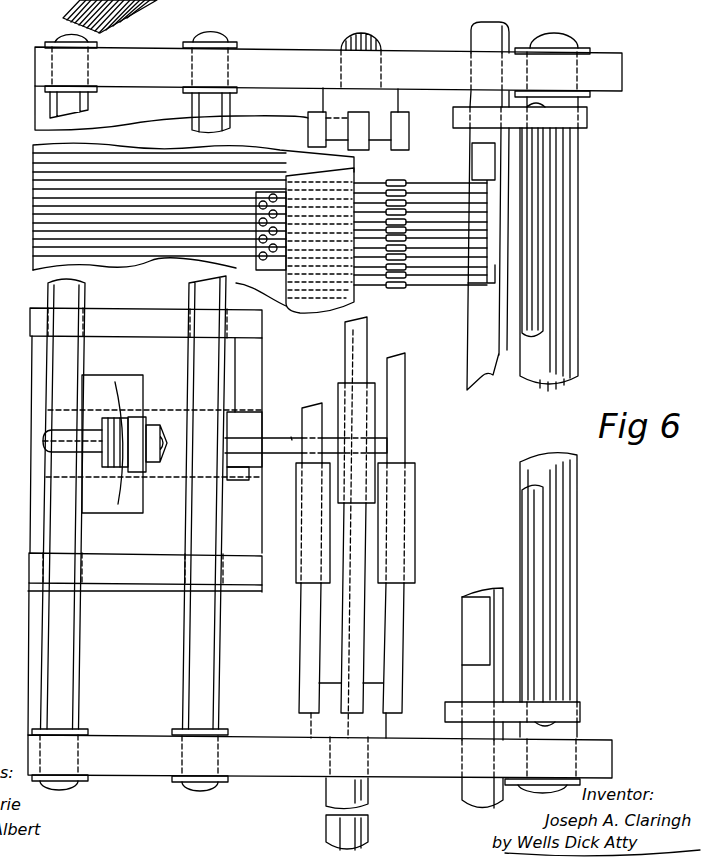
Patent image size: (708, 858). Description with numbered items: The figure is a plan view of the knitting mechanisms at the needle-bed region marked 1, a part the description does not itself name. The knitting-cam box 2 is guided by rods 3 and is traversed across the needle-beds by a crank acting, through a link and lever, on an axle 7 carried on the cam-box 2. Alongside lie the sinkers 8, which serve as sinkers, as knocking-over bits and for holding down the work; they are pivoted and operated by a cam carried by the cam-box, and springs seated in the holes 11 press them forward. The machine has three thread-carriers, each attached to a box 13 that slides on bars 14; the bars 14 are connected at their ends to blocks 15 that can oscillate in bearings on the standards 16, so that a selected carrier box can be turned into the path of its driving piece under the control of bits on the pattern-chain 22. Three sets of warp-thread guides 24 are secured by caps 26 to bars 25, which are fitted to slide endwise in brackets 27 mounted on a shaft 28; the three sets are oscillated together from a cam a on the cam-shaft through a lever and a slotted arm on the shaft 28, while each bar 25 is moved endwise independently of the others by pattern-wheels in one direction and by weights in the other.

The key plate 1 is at (352, 159).
The knitting-cam box 2 is at (145, 521).
The rods 3 is at (311, 441).
The axle 7 is at (105, 444).
The sinkers 8 is at (315, 240).
The holes 11 is at (287, 288).
The boxes 13 is at (338, 398).
The bars 14 is at (354, 425).
The blocks 15 is at (352, 722).
The standards 16 is at (325, 412).
The pattern-chain 22 is at (306, 446).
The warp-thread guides 24 is at (420, 236).
The bars 25 is at (485, 415).
The caps 26 is at (478, 404).
The brackets 27 is at (587, 128).
The shaft 28 is at (549, 417).
The cam a is at (289, 430).